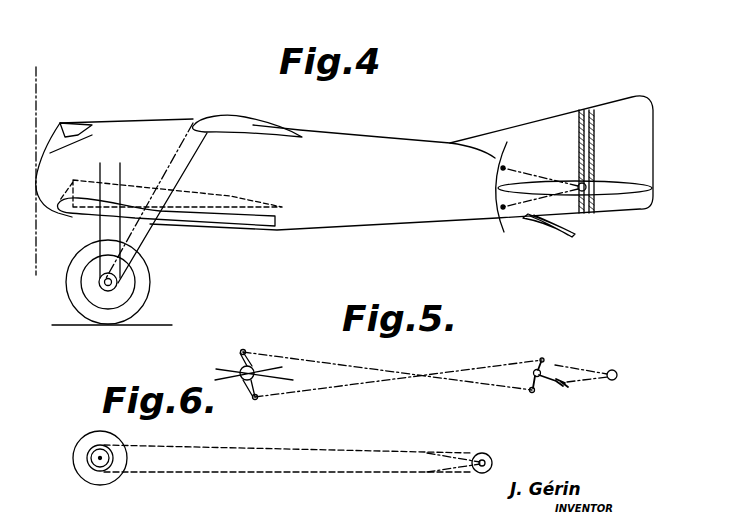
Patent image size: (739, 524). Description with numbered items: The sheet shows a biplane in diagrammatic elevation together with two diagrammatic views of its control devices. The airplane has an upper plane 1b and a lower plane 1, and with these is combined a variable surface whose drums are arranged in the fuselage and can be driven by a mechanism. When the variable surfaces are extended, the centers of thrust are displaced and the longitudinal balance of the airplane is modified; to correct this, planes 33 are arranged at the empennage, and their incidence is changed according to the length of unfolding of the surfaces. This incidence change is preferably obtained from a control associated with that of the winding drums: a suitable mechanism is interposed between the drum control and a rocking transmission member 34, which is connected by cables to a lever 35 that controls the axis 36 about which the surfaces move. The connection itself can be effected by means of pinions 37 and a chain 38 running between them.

In FIG. 4, the lower plane 1 is at (87, 195).
In FIG. 4, the upper plane 1b is at (230, 127).
In FIG. 4, the planes 33 is at (540, 187).
In FIG. 5, the rocking transmission member 34 is at (240, 352).
In FIG. 5, the lever 35 is at (538, 380).
In FIG. 4, the axis 36 is at (585, 200).
In FIG. 5, the axis 36 is at (611, 381).
In FIG. 6, the pinions 37 is at (105, 470).
In FIG. 6, the chain 38 is at (300, 452).